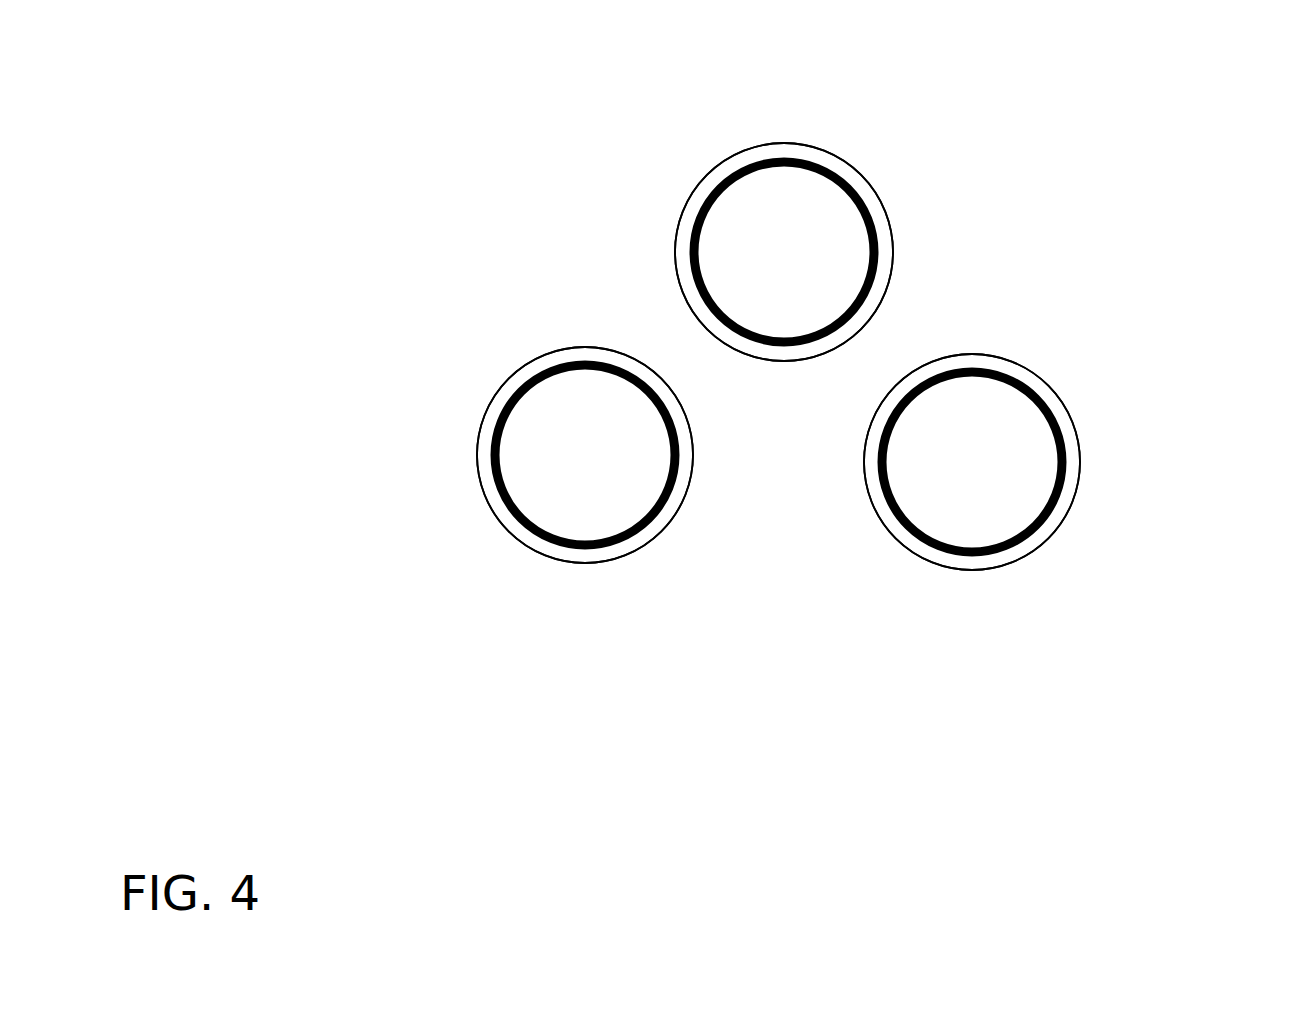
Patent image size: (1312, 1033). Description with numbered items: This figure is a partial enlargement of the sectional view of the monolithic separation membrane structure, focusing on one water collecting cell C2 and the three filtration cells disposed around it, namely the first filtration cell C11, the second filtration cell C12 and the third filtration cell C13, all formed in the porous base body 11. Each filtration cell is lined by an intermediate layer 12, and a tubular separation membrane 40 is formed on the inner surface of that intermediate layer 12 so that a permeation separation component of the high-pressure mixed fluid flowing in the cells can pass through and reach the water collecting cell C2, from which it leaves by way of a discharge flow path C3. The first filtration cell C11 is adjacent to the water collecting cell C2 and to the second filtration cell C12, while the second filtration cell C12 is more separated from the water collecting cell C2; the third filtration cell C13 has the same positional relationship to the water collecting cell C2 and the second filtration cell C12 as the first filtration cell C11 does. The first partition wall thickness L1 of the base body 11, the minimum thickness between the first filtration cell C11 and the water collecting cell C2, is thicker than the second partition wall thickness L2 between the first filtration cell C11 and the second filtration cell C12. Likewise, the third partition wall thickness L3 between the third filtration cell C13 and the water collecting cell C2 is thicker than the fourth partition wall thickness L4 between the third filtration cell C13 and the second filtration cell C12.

The base body 11 is at (1129, 97).
The intermediate layer 12 is at (677, 241).
The separation membrane 40 is at (706, 204).
The first filtration cell C11 is at (983, 368).
The second filtration cell C12 is at (795, 157).
The third filtration cell C13 is at (527, 377).
The water collecting cell C2 is at (801, 785).
The discharge flow path C3 is at (1178, 767).
The first partition wall thickness L1 is at (917, 555).
The second partition wall thickness L2 is at (900, 382).
The third partition wall thickness L3 is at (640, 548).
The fourth partition wall thickness L4 is at (708, 330).